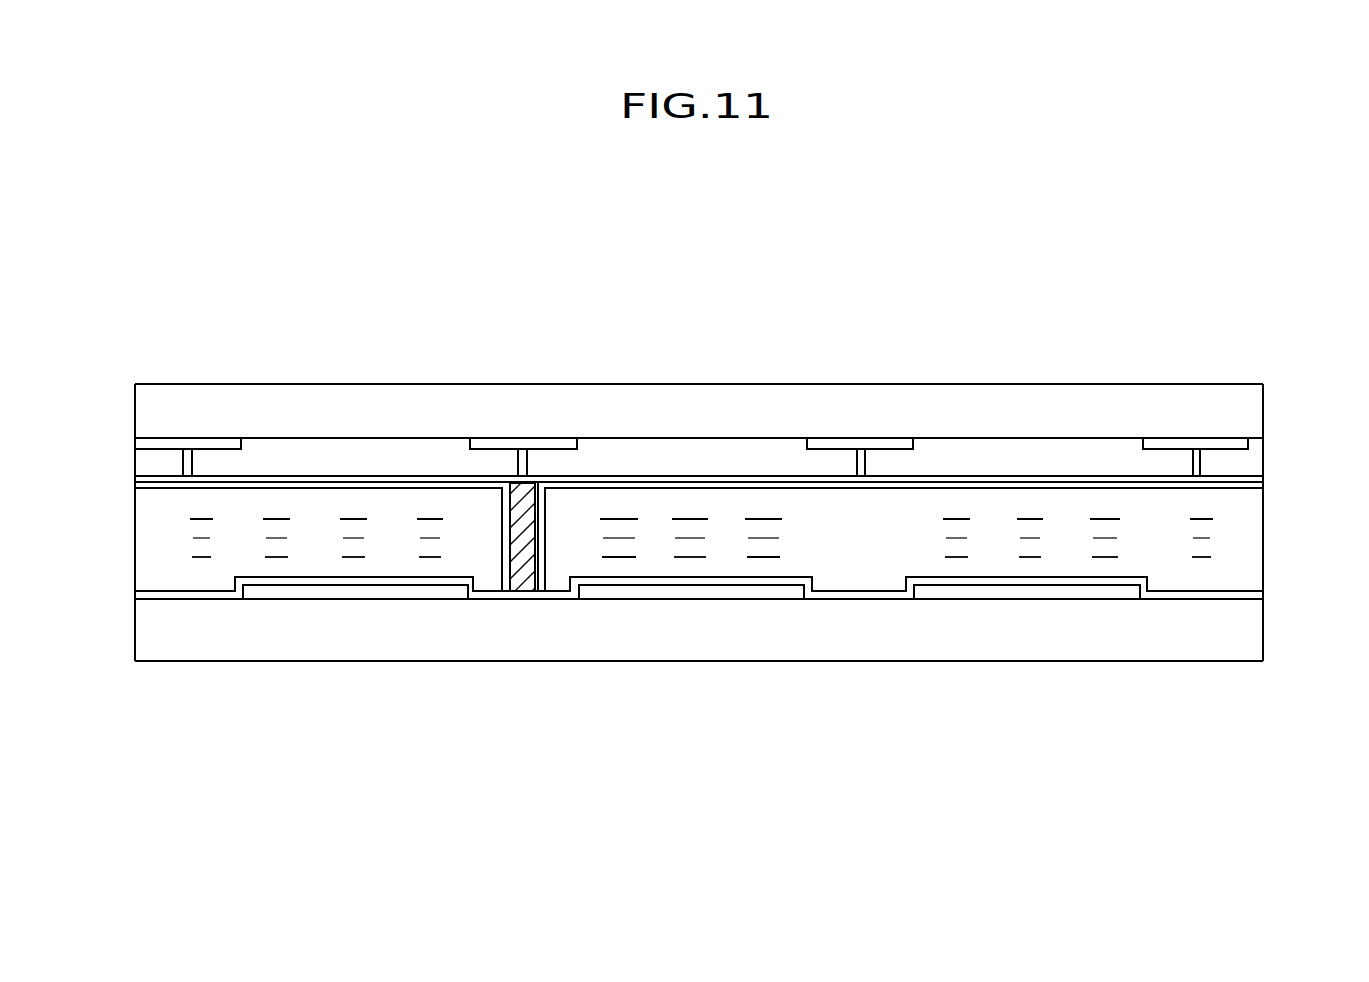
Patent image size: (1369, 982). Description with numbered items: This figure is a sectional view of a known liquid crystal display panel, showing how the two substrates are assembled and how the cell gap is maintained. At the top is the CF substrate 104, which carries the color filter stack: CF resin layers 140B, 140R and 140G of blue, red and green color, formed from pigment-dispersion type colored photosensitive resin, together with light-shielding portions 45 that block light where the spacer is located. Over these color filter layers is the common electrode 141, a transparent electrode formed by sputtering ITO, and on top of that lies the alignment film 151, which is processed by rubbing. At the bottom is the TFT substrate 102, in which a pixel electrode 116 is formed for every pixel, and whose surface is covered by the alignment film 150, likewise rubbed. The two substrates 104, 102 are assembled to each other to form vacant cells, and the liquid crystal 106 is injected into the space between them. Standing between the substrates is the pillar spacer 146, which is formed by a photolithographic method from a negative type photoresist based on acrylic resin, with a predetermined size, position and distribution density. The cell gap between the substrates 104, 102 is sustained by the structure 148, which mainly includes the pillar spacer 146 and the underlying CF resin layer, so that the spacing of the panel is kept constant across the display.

The CF substrate 104 is at (1275, 384).
The TFT substrate 102 is at (1275, 577).
The liquid crystal 106 is at (1228, 560).
The light shielding film 45 is at (1183, 438).
The blue CF resin layer 140B is at (380, 453).
The red CF resin layer 140R is at (713, 453).
The green CF resin layer 140G is at (953, 455).
The common electrode 141 is at (1058, 475).
The alignment film 151 is at (172, 488).
The pillar spacer 146 is at (530, 529).
The structure 148 is at (527, 628).
The alignment film 150 is at (168, 592).
The pixel electrode 116 is at (1043, 592).